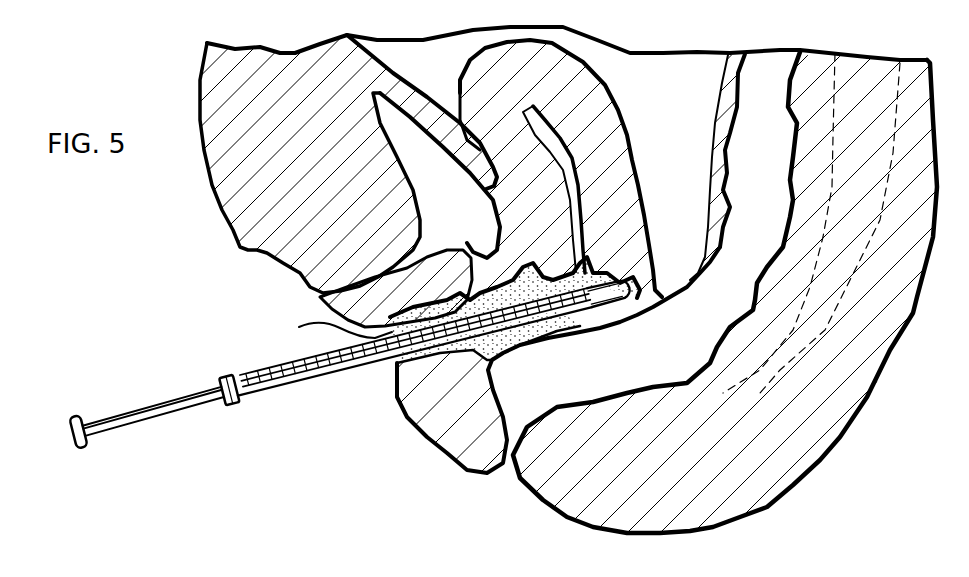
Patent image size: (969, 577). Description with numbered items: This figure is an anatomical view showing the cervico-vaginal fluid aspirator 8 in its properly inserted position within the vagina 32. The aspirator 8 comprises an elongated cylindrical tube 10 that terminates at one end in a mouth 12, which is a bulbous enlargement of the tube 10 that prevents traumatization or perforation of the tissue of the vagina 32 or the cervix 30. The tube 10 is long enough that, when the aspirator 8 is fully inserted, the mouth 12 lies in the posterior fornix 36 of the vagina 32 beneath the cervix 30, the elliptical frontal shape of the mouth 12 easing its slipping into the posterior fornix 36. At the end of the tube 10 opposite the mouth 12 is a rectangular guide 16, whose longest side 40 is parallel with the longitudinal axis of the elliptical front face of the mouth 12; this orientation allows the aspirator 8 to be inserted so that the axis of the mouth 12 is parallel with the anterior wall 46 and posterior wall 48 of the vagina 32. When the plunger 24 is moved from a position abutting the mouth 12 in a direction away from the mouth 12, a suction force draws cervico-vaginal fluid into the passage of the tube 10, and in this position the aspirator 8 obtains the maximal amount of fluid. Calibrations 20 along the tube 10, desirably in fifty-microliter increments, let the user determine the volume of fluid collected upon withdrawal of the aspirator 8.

The cervico-vaginal fluid aspirator 8 is at (304, 394).
The elongated cylindrical tube 10 is at (357, 364).
The mouth 12 is at (642, 311).
The guide 16 is at (220, 381).
The calibrations 20 is at (248, 376).
The plunger 24 is at (100, 413).
The cervix 30 is at (558, 262).
The vagina 32 is at (331, 329).
The posterior fornix 36 is at (655, 265).
The longest side 40 is at (233, 406).
The anterior wall 46 is at (470, 252).
The posterior wall 48 is at (528, 342).